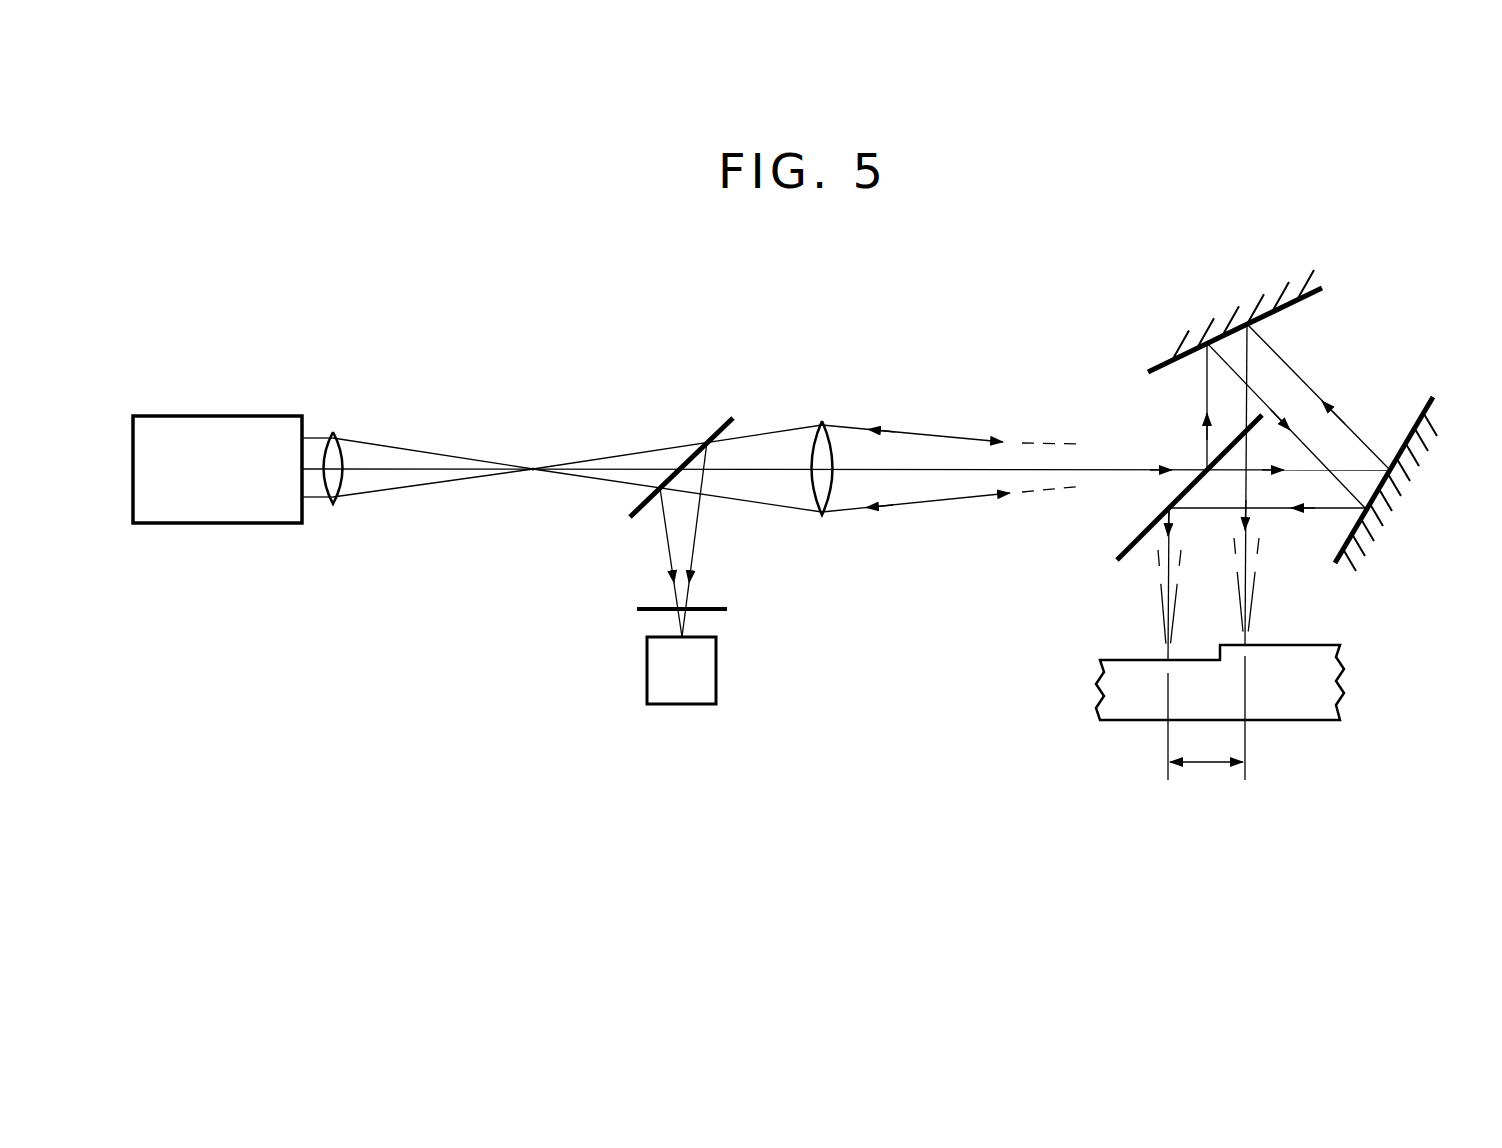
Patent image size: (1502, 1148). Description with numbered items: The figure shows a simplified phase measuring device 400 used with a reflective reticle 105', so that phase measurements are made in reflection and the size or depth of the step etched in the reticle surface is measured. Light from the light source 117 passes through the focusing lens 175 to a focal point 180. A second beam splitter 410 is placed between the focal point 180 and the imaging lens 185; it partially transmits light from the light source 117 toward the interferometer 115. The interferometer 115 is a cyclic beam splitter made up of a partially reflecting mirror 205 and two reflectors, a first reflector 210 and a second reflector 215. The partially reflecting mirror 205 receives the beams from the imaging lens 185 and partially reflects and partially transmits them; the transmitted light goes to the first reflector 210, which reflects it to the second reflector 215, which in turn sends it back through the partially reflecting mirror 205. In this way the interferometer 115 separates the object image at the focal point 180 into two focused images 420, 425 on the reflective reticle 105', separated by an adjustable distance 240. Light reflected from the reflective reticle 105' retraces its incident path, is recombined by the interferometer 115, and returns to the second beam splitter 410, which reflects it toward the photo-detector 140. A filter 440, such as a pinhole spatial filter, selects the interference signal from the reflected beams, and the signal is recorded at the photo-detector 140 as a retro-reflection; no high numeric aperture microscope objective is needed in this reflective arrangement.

The light source 117 is at (230, 518).
The focusing lens 175 is at (336, 483).
The focal point 180 is at (534, 466).
The second beam splitter 410 is at (707, 433).
The imaging lens 185 is at (830, 443).
The filter 440 is at (645, 614).
The photo-detector 140 is at (683, 696).
The second reflector 215 is at (1155, 370).
The first reflector 210 is at (1420, 412).
The partially reflecting mirror 205 is at (1128, 545).
The reflective reticle 105' is at (1288, 682).
The focused image 425 is at (1163, 656).
The focused image 420 is at (1247, 640).
The adjustable distance 240 is at (1210, 764).
The phase measuring device 400 is at (512, 790).
The interferometer 115 is at (1414, 304).